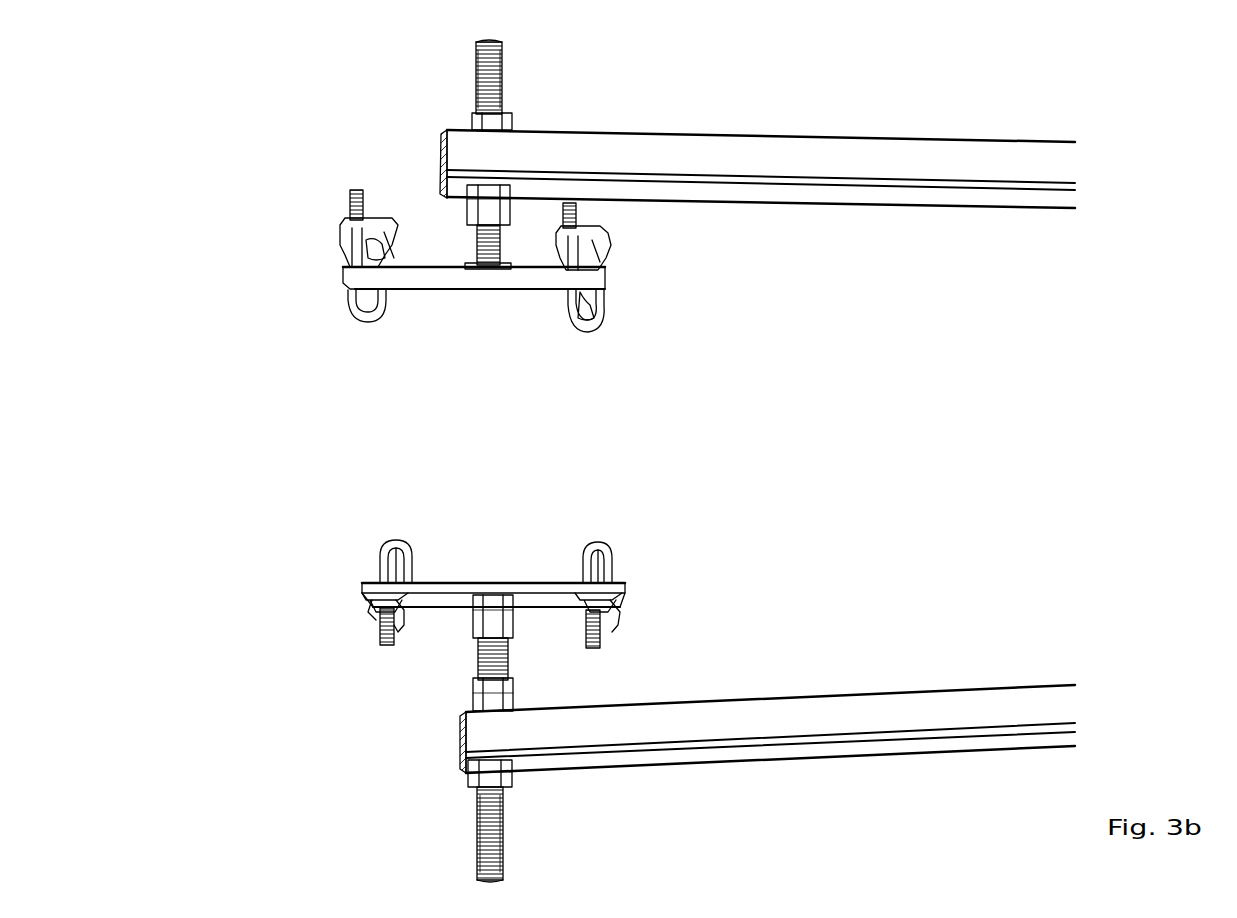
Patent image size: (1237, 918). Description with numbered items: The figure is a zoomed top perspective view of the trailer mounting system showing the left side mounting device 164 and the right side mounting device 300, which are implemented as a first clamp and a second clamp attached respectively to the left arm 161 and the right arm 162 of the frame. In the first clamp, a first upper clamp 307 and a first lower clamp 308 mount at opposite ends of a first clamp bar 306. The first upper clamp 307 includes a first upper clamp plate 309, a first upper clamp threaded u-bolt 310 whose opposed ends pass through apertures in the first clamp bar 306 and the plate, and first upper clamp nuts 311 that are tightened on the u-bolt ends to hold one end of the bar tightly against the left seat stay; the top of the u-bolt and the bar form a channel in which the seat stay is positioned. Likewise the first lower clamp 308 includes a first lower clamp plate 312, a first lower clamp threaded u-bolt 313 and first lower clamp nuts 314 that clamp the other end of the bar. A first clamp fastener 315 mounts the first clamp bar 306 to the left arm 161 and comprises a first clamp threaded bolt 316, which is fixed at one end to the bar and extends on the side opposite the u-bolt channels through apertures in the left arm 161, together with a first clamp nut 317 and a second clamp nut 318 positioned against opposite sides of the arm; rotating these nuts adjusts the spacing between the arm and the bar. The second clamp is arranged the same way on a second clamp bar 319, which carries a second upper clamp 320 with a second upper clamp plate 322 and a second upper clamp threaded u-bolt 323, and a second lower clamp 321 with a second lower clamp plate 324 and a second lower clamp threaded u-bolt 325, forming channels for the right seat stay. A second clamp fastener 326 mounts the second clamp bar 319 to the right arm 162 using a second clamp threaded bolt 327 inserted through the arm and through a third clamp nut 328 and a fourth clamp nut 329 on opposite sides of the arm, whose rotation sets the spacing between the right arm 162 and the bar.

The right side mounting device 300 is at (462, 297).
The right arm 162 is at (909, 170).
The left arm 161 is at (927, 727).
The left side mounting device 164 is at (493, 538).
The first clamp bar 306 is at (462, 583).
The first upper clamp 307 is at (387, 540).
The first lower clamp 308 is at (606, 542).
The first upper clamp plate 309 is at (370, 597).
The first upper clamp threaded u-bolt 310 is at (388, 558).
The first upper clamp nuts 311 is at (380, 608).
The first lower clamp plate 312 is at (604, 598).
The first lower clamp threaded u-bolt 313 is at (600, 560).
The first lower clamp nuts 314 is at (606, 612).
The first clamp fastener 315 is at (476, 670).
The first clamp threaded bolt 316 is at (492, 832).
The first clamp nut 317 is at (470, 775).
The second clamp nut 318 is at (497, 702).
The second clamp bar 319 is at (528, 284).
The second upper clamp 320 is at (362, 312).
The second lower clamp 321 is at (600, 323).
The second upper clamp plate 322 is at (360, 225).
The second upper clamp threaded u-bolt 323 is at (360, 259).
The second lower clamp plate 324 is at (587, 246).
The second lower clamp threaded u-bolt 325 is at (592, 304).
The second clamp fastener 326 is at (504, 72).
The second clamp threaded bolt 327 is at (500, 95).
The third clamp nut 328 is at (468, 121).
The fourth clamp nut 329 is at (486, 198).